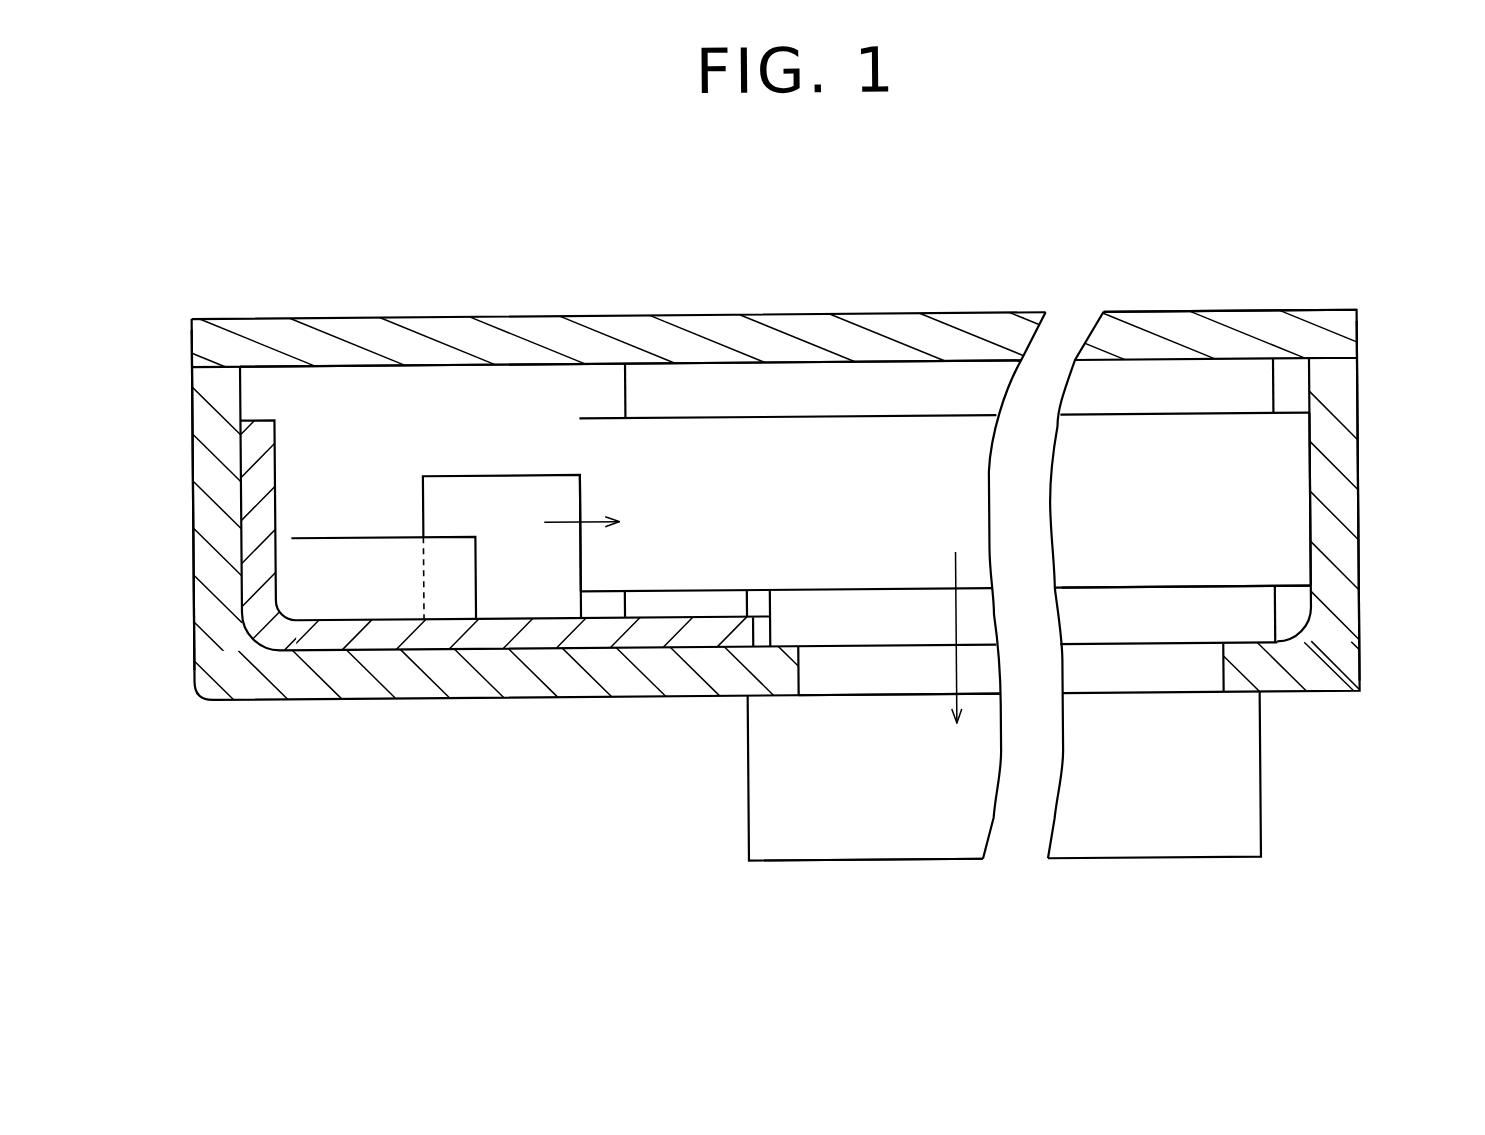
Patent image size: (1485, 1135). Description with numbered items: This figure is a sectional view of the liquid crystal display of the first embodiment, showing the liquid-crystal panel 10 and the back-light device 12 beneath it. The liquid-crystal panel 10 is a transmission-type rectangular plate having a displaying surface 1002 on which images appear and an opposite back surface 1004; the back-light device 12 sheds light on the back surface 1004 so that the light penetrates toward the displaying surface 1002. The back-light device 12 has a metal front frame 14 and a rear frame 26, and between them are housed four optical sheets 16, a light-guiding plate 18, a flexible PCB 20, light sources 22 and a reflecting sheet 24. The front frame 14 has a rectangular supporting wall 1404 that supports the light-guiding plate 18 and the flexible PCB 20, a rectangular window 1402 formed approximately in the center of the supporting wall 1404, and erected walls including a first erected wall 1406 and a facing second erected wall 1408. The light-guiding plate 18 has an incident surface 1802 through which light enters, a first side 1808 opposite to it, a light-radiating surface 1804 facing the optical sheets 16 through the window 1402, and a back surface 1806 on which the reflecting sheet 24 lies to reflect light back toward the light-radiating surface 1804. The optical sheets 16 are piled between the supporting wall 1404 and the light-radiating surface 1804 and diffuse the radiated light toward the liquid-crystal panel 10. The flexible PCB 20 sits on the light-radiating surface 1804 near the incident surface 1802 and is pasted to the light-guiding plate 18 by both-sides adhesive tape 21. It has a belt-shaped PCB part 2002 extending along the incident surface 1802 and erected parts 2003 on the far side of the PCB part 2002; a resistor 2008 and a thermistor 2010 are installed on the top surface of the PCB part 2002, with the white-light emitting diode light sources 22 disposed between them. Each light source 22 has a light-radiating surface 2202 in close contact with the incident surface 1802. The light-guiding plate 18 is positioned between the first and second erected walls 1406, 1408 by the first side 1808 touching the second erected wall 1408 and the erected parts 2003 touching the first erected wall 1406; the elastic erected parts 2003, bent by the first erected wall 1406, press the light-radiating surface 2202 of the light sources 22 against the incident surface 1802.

The liquid-crystal panel 10 is at (1049, 740).
The displaying surface 1002 is at (954, 867).
The back surface 1004 is at (878, 698).
The back-light device 12 is at (1055, 272).
The front frame 14 is at (779, 524).
The rectangular window 1402 is at (797, 668).
The supporting wall 1404 is at (537, 701).
The first erected wall 1406 is at (192, 481).
The second erected wall 1408 is at (1361, 573).
The optical sheets 16 is at (1248, 623).
The light-guiding plate 18 is at (995, 423).
The incident surface 1802 is at (579, 511).
The light-radiating surface 1804 is at (1149, 596).
The back surface 1806 is at (1145, 421).
The first side 1808 is at (1312, 504).
The flexible PCB 20 is at (432, 604).
The PCB part 2002 is at (494, 621).
The erected parts 2003 is at (279, 482).
The resistor 2008 is at (364, 431).
The thermistor 2010 is at (349, 539).
The both-sides adhesive tape 21 is at (694, 604).
The light sources 22 is at (583, 422).
The light-radiating surface 2202 is at (586, 509).
The reflecting sheet 24 is at (951, 364).
The rear frame 26 is at (1265, 320).